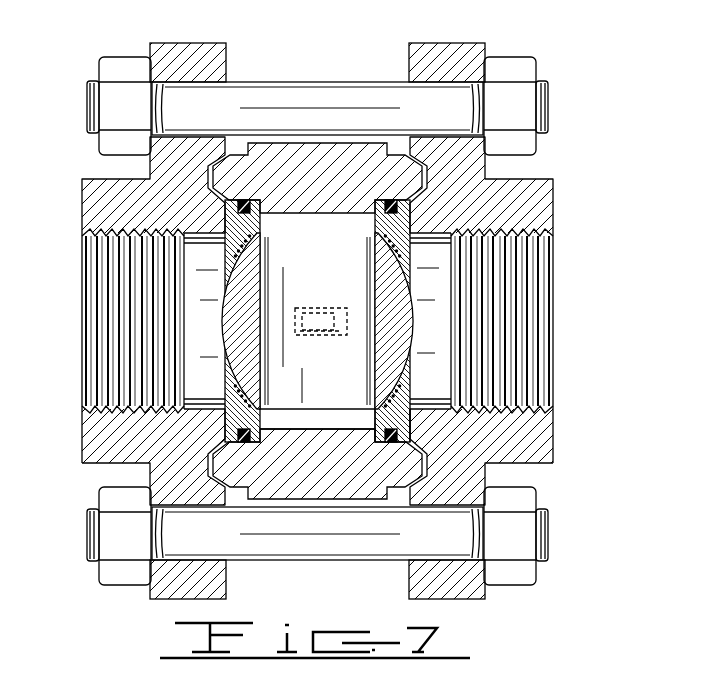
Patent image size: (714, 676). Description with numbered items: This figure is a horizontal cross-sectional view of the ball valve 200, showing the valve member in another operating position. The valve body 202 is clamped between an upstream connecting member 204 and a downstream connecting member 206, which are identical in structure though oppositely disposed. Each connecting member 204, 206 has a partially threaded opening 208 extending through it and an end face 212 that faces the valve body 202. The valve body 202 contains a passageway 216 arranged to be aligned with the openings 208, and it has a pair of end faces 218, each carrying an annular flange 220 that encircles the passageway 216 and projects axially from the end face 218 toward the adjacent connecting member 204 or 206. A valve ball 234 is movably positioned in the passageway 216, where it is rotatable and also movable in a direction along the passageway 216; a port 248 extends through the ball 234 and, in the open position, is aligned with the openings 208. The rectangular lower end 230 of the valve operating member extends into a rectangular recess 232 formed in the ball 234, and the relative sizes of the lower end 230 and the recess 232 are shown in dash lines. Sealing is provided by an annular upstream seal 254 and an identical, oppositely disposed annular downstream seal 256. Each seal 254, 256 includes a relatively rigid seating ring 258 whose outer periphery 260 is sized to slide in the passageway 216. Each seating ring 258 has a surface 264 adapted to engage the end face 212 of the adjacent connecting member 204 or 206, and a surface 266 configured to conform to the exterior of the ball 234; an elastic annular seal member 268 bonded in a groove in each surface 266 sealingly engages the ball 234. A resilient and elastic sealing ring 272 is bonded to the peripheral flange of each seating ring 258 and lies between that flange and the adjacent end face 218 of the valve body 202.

The ball valve 200 is at (562, 71).
The valve body 202 is at (337, 185).
The upstream connecting member 204 is at (191, 50).
The downstream connecting member 206 is at (448, 58).
The partially threaded opening 208 is at (97, 327).
The end face 212 is at (404, 423).
The passageway 216 is at (288, 427).
The end faces 218 is at (242, 492).
The annular flange 220 is at (228, 462).
The rectangular lower end 230 is at (320, 284).
The rectangular recess 232 is at (358, 289).
The valve ball 234 is at (410, 328).
The port 248 is at (333, 358).
The annular upstream seal 254 is at (236, 224).
The annular downstream seal 256 is at (399, 224).
The seating ring 258 is at (379, 416).
The outer periphery 260 is at (378, 437).
The surface 264 is at (426, 403).
The surface 266 is at (408, 389).
The elastic annular seal member 268 is at (403, 385).
The sealing ring 272 is at (241, 443).